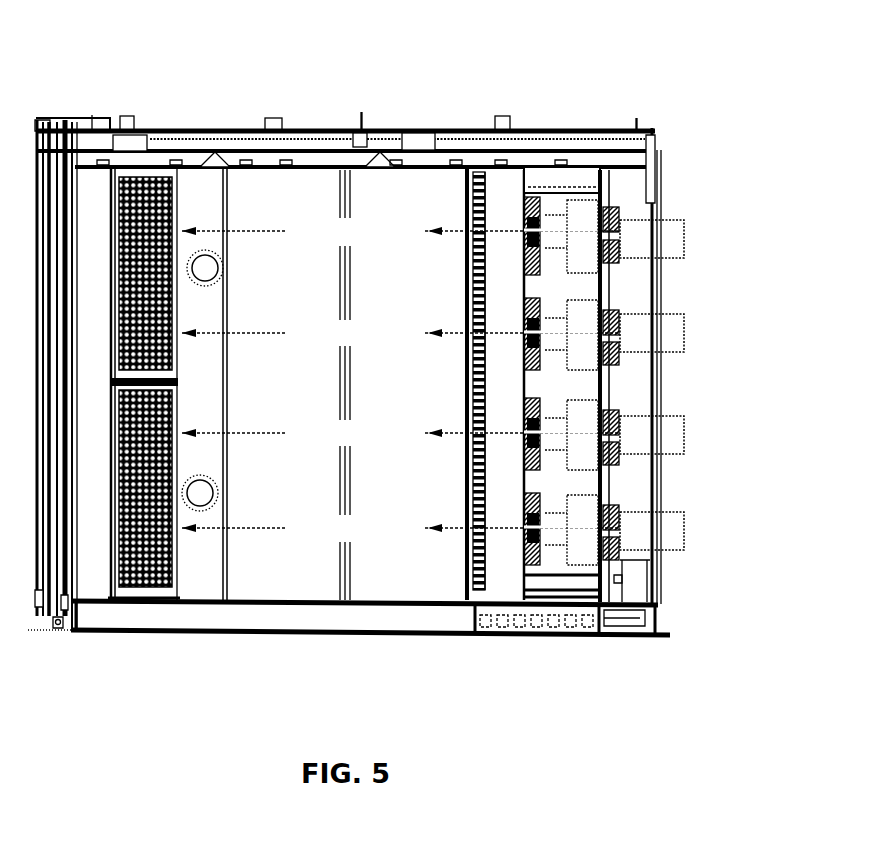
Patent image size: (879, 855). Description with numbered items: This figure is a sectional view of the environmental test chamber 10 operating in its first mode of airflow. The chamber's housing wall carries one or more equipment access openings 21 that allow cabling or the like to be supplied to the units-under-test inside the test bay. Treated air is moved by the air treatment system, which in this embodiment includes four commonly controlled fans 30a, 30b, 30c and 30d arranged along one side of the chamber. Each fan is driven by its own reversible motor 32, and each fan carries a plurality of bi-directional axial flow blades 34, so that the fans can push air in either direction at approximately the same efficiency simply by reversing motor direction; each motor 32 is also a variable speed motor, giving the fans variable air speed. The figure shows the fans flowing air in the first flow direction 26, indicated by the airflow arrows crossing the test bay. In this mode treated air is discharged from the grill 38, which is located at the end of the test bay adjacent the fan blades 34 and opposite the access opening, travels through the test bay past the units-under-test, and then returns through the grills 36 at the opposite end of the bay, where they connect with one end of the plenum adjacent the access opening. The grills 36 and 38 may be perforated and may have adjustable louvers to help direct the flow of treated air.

The environmental test chamber 10 is at (349, 374).
The equipment access opening 21 is at (217, 274).
The first flow direction 26 is at (256, 234).
The fan 30a is at (622, 219).
The fan 30b is at (622, 314).
The fan 30c is at (622, 416).
The fan 30d is at (622, 512).
The reversible motor 32 is at (686, 540).
The bi-directional axial flow blades 34 is at (537, 230).
The grill 36 is at (176, 560).
The grill 38 is at (466, 562).